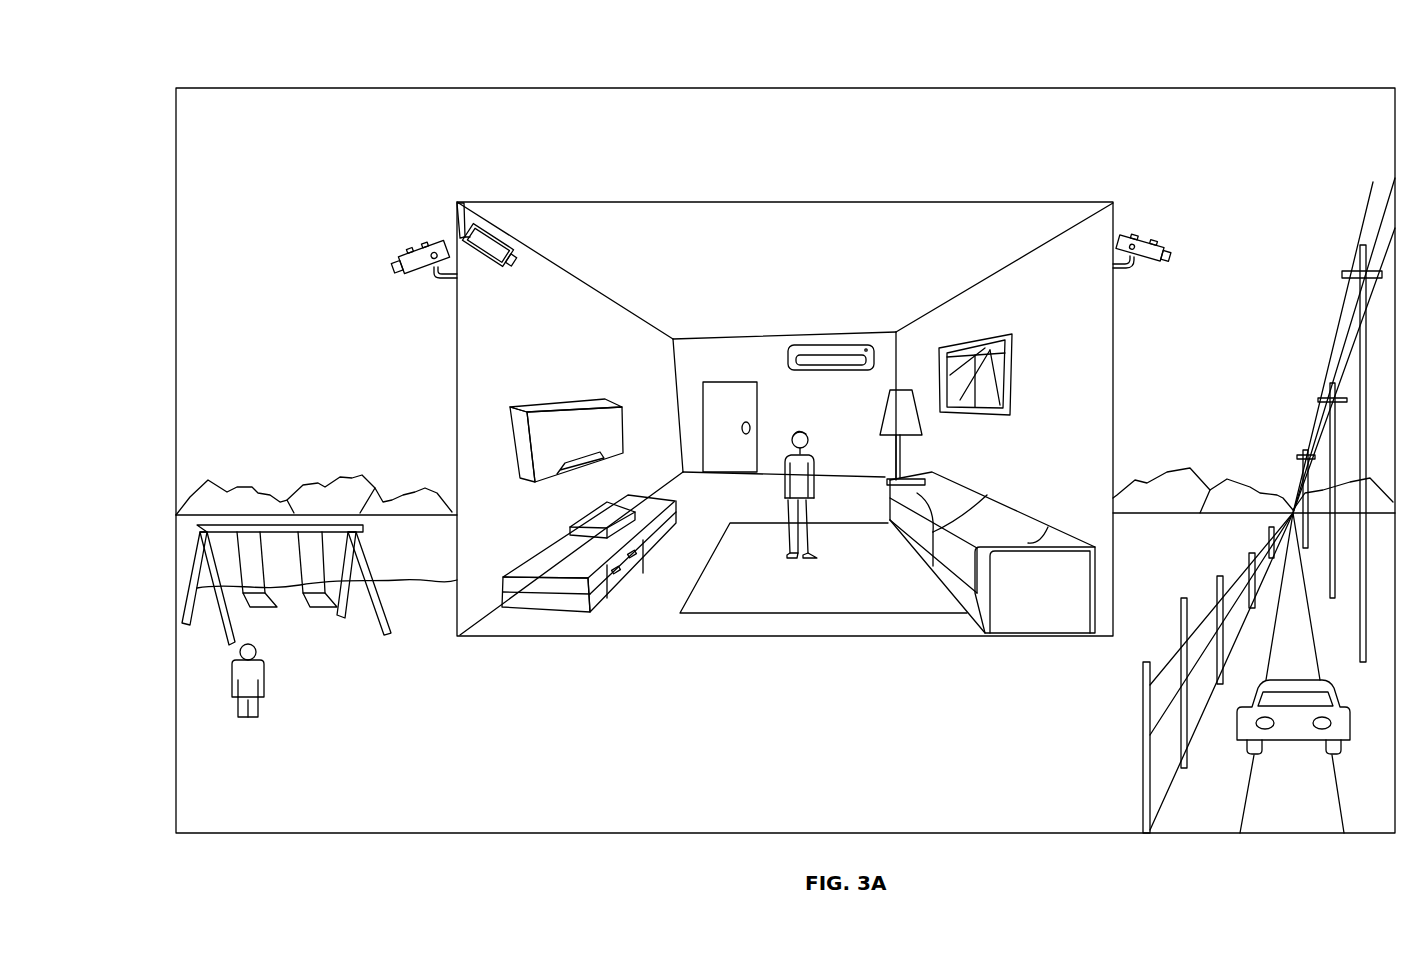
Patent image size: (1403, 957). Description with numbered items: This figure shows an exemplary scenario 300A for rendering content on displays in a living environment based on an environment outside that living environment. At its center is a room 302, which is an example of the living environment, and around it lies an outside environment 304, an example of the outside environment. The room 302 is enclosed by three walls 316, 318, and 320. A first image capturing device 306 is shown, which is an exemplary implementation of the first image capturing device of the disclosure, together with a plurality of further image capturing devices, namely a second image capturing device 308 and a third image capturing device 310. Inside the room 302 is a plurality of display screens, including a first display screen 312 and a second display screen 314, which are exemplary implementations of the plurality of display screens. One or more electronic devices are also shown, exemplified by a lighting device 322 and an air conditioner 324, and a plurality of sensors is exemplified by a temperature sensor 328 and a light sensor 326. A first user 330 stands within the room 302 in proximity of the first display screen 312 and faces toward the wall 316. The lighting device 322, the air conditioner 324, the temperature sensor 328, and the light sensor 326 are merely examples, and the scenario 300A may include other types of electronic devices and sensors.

The exemplary scenario 300A is at (240, 64).
The room 302 is at (880, 202).
The outside environment 304 is at (296, 206).
The first image capturing device 306 is at (485, 260).
The second image capturing device 308 is at (1168, 247).
The third image capturing device 310 is at (423, 270).
The first display screen 312 is at (1010, 387).
The second display screen 314 is at (547, 407).
The wall 316 is at (968, 307).
The wall 318 is at (732, 342).
The wall 320 is at (628, 328).
The lighting device 322 is at (888, 417).
The air conditioner 324 is at (820, 348).
The light sensor 326 is at (1158, 241).
The temperature sensor 328 is at (1135, 236).
The first user 330 is at (786, 483).